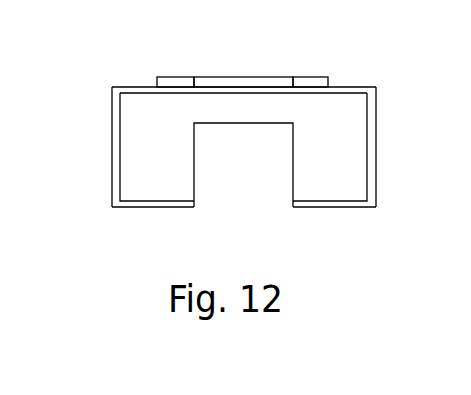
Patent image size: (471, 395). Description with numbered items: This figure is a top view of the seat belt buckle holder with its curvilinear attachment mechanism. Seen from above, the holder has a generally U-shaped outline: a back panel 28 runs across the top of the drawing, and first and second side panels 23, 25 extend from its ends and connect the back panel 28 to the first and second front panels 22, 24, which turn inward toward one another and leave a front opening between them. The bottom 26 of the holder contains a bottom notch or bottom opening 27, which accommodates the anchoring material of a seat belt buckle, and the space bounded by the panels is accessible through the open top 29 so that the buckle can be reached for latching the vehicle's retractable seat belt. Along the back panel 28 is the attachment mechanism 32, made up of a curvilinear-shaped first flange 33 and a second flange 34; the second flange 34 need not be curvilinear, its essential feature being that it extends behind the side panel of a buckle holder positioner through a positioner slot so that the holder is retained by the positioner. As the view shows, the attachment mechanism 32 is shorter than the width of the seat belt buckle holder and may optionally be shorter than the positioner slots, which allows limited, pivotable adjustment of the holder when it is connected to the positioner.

The first front panel 22 is at (153, 207).
The first side panel 23 is at (113, 180).
The second front panel 24 is at (335, 207).
The second side panel 25 is at (375, 168).
The bottom 26 is at (138, 157).
The bottom opening 27 is at (293, 158).
The back panel 28 is at (137, 93).
The open top 29 is at (353, 140).
The attachment mechanism 32 is at (157, 77).
The first flange 33 is at (322, 75).
The second flange 34 is at (244, 81).